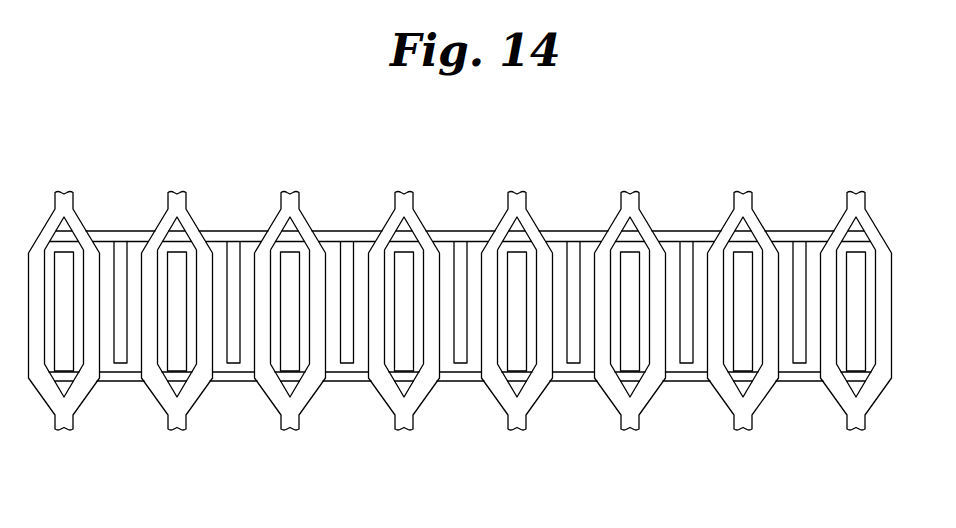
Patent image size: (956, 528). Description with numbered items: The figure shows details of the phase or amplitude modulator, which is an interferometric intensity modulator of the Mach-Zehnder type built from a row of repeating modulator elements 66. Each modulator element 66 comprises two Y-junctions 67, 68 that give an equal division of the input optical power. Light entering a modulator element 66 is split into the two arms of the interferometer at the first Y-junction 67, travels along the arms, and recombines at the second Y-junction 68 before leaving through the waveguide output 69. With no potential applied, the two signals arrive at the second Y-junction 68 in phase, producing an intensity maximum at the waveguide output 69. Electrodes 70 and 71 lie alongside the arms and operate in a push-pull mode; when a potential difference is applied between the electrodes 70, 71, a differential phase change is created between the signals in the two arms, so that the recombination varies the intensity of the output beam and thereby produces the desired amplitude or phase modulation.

The modulator element 66 is at (421, 221).
The Y-junction 67 is at (292, 191).
The Y-junction 68 is at (765, 397).
The waveguide output 69 is at (742, 431).
The electrode 70 is at (120, 231).
The electrode 71 is at (128, 382).